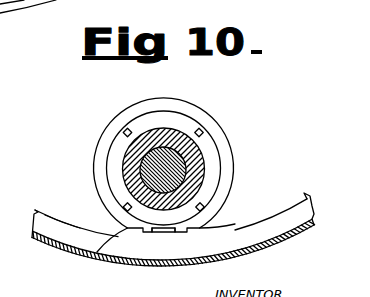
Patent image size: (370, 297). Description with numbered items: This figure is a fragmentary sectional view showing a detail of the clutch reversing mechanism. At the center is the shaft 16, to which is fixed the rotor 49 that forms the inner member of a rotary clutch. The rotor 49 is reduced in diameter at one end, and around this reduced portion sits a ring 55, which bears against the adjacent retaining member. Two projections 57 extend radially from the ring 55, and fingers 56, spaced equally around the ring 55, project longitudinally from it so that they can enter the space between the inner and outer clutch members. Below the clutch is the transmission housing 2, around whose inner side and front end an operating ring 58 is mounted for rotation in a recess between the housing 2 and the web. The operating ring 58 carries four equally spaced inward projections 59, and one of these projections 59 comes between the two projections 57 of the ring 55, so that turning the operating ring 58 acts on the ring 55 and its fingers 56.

The transmission housing 2 is at (276, 249).
The shaft 16 is at (186, 160).
The rotor 49 is at (122, 152).
The ring 55 is at (214, 168).
The fingers 56 is at (198, 130).
The projections 57 is at (233, 224).
The operating ring 58 is at (67, 233).
The inward projections 59 is at (168, 233).